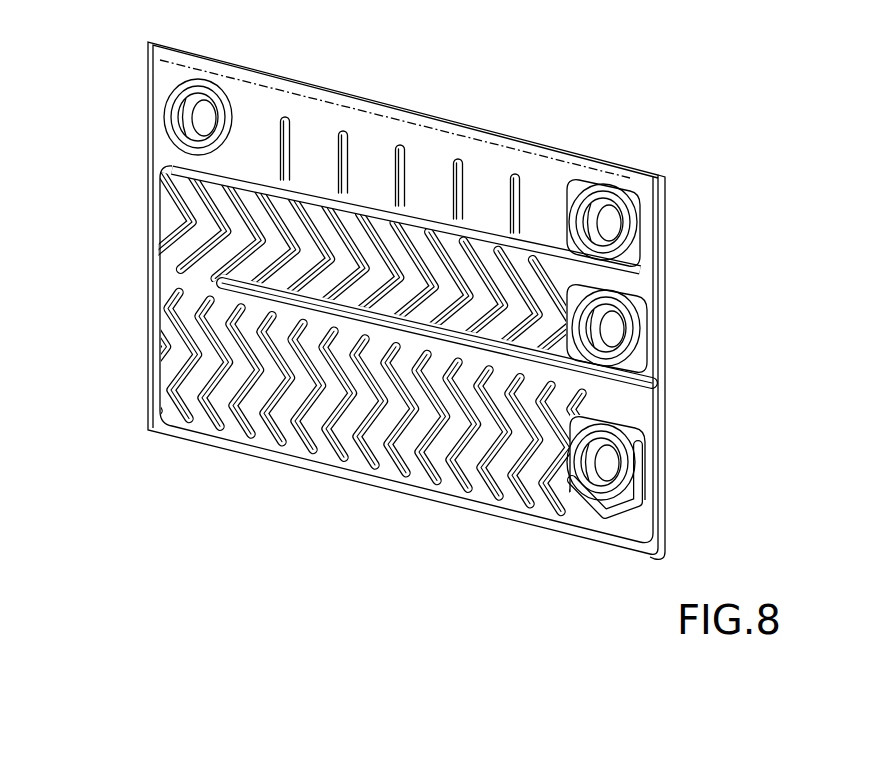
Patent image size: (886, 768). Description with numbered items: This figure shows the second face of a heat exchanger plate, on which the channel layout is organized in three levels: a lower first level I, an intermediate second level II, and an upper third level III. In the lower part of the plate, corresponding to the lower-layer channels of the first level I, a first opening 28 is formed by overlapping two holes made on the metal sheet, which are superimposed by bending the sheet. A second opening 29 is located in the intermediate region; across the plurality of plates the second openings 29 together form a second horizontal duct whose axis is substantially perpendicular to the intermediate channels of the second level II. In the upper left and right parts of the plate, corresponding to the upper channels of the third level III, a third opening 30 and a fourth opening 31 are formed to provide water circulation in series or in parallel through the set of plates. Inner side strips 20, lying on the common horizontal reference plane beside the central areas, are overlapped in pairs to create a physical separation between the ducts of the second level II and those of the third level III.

The inner side strips 20 is at (173, 168).
The first opening 28 is at (605, 470).
The second opening 29 is at (608, 338).
The third opening 30 is at (600, 207).
The fourth opening 31 is at (176, 121).
The first level I is at (655, 551).
The second level II is at (655, 396).
The third level III is at (428, 146).